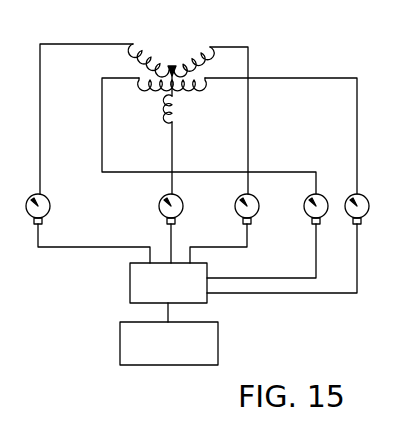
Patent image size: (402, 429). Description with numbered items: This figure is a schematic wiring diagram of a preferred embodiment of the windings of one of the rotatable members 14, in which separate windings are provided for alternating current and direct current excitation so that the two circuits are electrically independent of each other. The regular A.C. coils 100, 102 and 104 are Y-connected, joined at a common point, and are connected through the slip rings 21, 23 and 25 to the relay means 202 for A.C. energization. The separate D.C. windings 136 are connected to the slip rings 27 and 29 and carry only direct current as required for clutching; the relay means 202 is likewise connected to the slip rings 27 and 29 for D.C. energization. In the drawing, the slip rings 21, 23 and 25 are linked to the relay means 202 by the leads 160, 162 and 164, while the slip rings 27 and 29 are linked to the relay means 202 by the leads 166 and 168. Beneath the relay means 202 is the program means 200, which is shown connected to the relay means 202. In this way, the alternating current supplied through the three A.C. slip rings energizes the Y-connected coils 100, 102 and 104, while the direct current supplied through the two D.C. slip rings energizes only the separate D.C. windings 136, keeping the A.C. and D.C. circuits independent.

The transformer 14 is at (179, 72).
The slip ring 21 is at (29, 203).
The slip ring 23 is at (188, 197).
The slip ring 25 is at (265, 198).
The slip ring 27 is at (306, 203).
The slip ring 29 is at (347, 203).
The A.C. coil 100 is at (152, 112).
The A.C. coil 102 is at (150, 42).
The A.C. coil 104 is at (205, 46).
The D.C. windings 136 is at (207, 80).
The lead 160 is at (86, 246).
The lead 162 is at (169, 240).
The lead 164 is at (245, 240).
The lead 166 is at (314, 255).
The lead 168 is at (355, 258).
The program means 200 is at (120, 352).
The relay means 202 is at (130, 276).